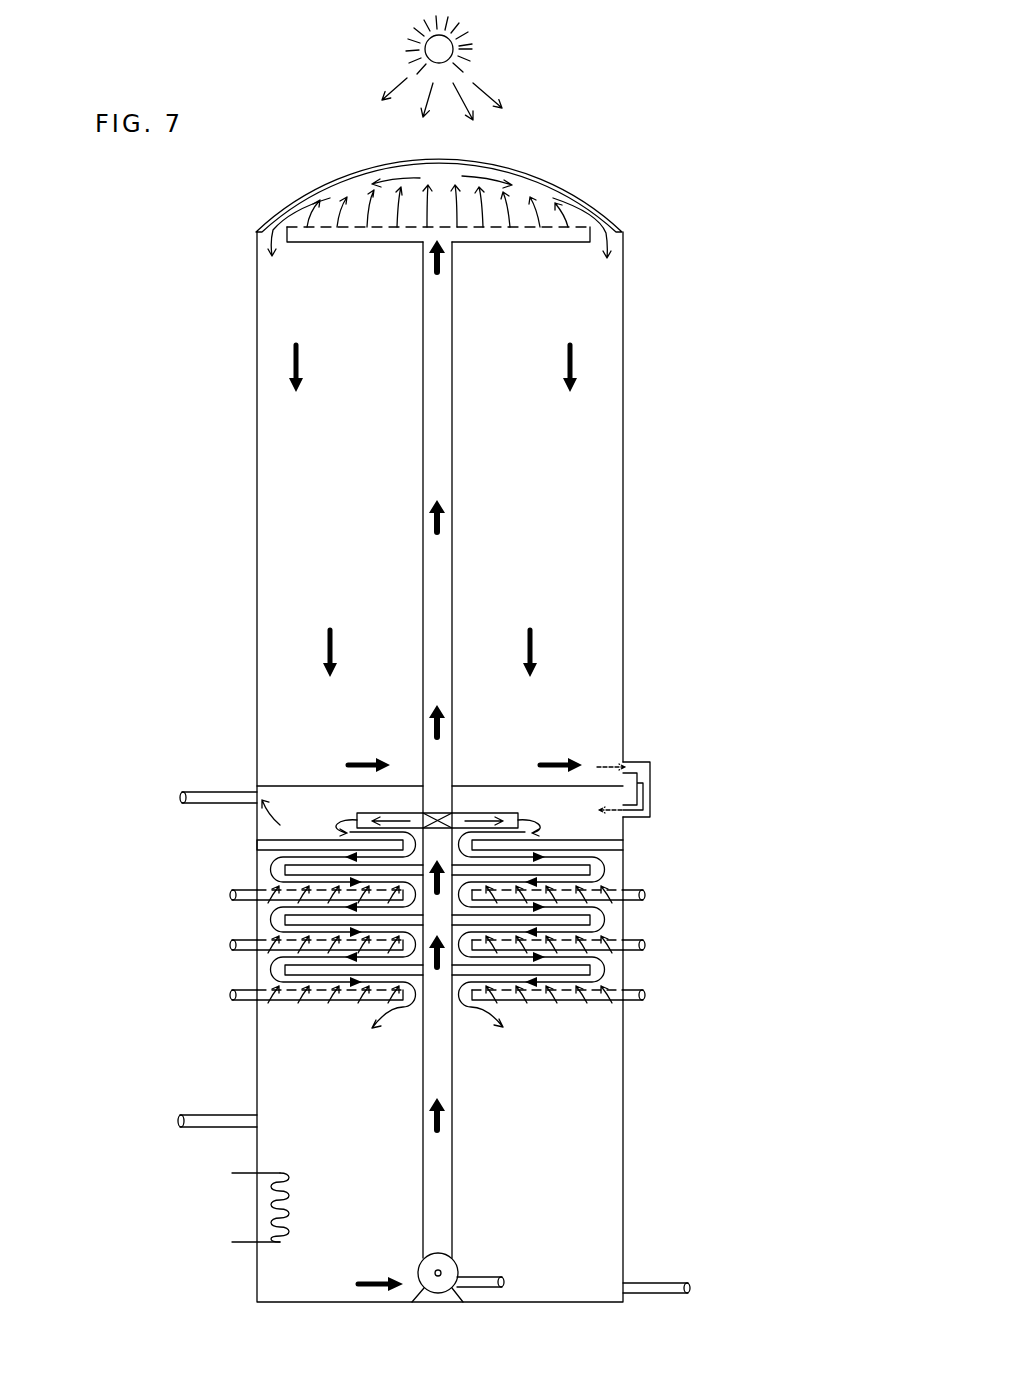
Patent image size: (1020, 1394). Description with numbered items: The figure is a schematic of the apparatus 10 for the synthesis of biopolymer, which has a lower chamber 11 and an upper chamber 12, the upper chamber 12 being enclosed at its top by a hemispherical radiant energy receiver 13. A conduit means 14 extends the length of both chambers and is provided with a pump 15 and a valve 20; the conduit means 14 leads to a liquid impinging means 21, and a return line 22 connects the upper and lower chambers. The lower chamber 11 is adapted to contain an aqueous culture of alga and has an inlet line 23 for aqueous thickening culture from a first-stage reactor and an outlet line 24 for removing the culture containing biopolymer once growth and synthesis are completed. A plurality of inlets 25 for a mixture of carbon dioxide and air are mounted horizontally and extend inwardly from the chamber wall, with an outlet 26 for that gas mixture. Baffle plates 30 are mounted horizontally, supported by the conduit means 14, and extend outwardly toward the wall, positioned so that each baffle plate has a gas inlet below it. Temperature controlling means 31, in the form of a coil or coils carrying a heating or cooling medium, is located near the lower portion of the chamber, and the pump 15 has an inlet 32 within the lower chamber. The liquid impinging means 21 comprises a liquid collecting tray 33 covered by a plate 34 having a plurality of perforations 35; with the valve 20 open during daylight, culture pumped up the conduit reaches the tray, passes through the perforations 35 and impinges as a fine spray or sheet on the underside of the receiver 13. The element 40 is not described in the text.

The apparatus 10 is at (700, 500).
The lower chamber 11 is at (610, 1140).
The upper chamber 12 is at (610, 428).
The hemispherical radiant energy receiver 13 is at (604, 214).
The conduit means 14 is at (456, 472).
The pump 15 is at (432, 1270).
The valve 20 is at (432, 815).
The liquid impinging means 21 is at (487, 244).
The return line 22 is at (652, 773).
The inlet line 23 is at (230, 1115).
The outlet line 24 is at (652, 1282).
The inlets 25 is at (242, 888).
The outlet 26 is at (232, 790).
The baffle plates 30 is at (284, 871).
The temperature controlling means 31 is at (287, 1197).
The inlet 32 is at (481, 1276).
The liquid collecting tray 33 is at (378, 234).
The plate 34 is at (325, 225).
The perforations 35 is at (570, 227).
The distribution header 40 is at (360, 812).